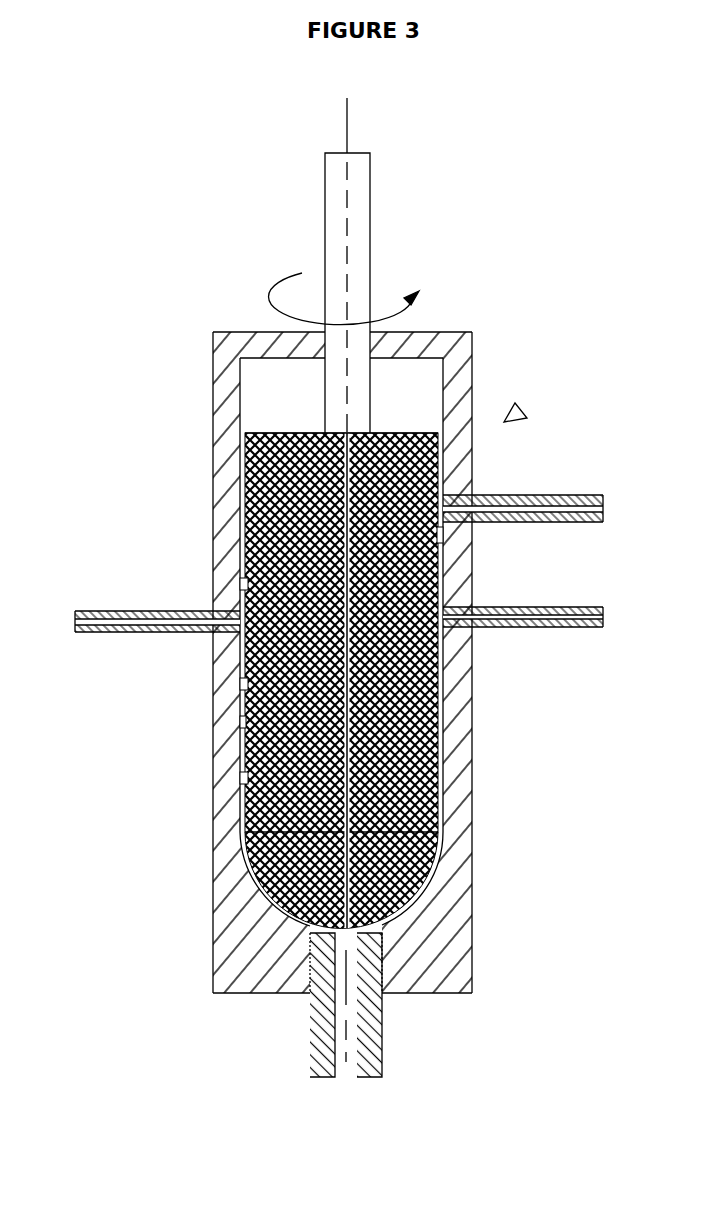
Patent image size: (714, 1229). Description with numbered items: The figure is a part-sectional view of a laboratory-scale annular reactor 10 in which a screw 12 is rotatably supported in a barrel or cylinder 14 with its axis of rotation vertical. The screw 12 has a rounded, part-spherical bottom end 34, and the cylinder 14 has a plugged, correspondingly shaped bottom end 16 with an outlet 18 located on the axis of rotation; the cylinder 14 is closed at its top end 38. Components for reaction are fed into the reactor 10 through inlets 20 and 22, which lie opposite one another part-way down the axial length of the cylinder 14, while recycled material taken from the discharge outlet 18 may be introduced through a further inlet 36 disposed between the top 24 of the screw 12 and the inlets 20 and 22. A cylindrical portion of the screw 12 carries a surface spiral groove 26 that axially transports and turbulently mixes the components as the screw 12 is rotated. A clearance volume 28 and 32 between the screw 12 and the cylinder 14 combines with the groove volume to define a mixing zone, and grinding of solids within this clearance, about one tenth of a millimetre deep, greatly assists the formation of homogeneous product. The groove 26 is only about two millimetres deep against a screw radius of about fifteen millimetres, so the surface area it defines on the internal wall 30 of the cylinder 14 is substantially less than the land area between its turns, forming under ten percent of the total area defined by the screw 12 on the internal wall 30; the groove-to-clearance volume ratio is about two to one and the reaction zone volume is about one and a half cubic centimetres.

The reactor 10 is at (523, 411).
The screw 12 is at (400, 572).
The cylinder 14 is at (453, 731).
The bottom end 16 is at (432, 928).
The outlet 18 is at (353, 1012).
The inlet 20 is at (575, 612).
The inlet 22 is at (125, 612).
The top of the screw 24 is at (245, 432).
The surface spiral groove 26 is at (245, 683).
The clearance volume 28 is at (240, 722).
The internal wall 30 is at (245, 776).
The clearance volume 32 is at (287, 918).
The bottom end 34 is at (365, 872).
The inlet 36 is at (575, 497).
The top end 38 is at (440, 348).